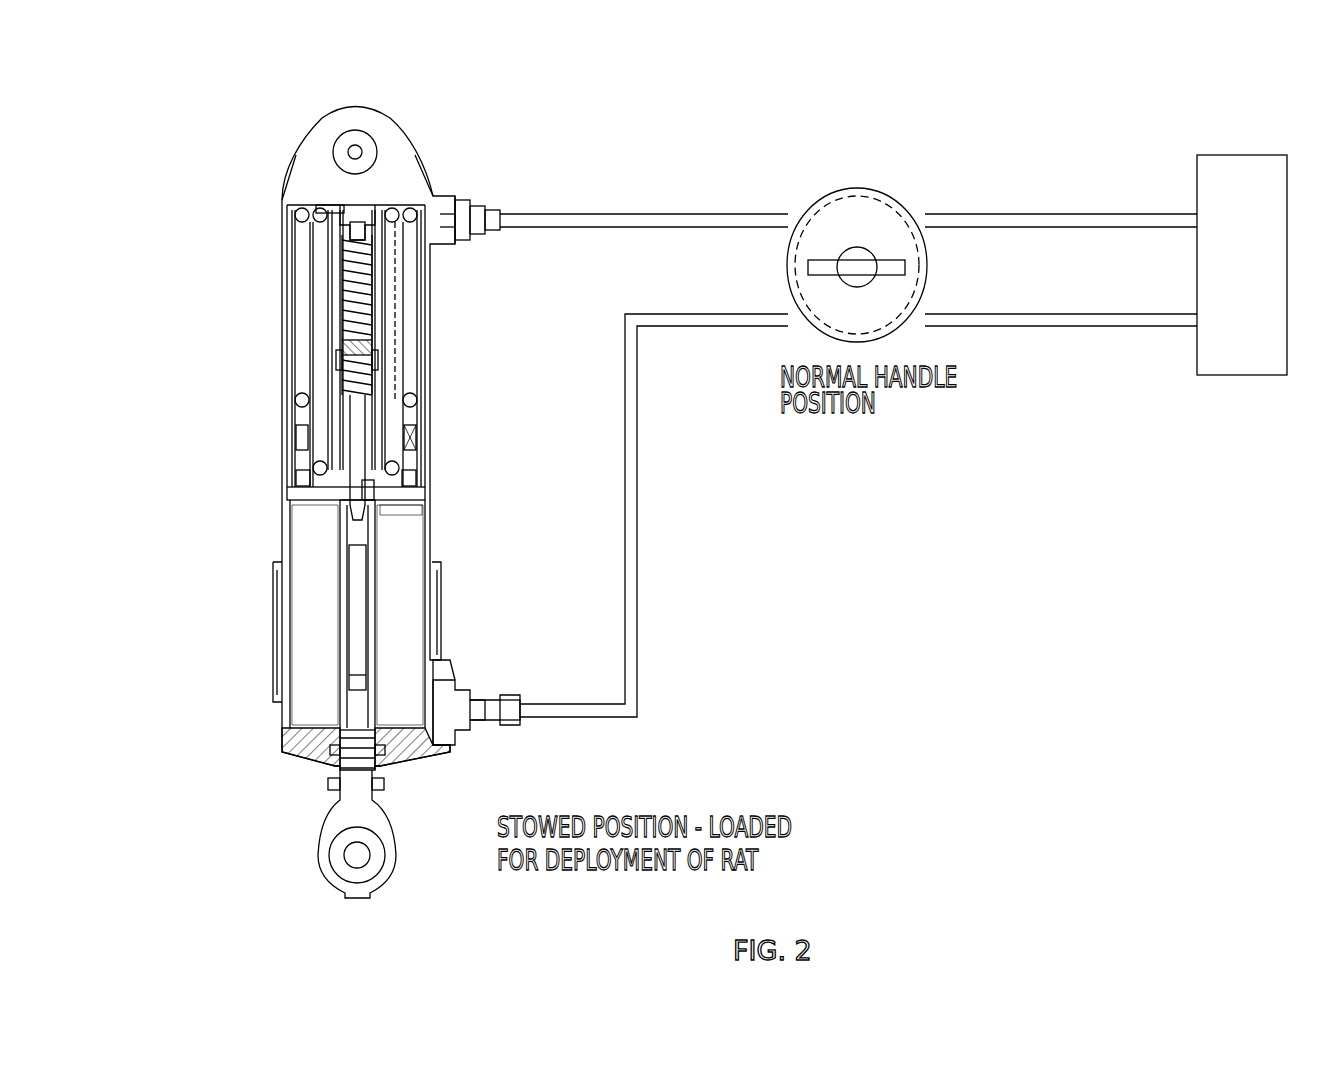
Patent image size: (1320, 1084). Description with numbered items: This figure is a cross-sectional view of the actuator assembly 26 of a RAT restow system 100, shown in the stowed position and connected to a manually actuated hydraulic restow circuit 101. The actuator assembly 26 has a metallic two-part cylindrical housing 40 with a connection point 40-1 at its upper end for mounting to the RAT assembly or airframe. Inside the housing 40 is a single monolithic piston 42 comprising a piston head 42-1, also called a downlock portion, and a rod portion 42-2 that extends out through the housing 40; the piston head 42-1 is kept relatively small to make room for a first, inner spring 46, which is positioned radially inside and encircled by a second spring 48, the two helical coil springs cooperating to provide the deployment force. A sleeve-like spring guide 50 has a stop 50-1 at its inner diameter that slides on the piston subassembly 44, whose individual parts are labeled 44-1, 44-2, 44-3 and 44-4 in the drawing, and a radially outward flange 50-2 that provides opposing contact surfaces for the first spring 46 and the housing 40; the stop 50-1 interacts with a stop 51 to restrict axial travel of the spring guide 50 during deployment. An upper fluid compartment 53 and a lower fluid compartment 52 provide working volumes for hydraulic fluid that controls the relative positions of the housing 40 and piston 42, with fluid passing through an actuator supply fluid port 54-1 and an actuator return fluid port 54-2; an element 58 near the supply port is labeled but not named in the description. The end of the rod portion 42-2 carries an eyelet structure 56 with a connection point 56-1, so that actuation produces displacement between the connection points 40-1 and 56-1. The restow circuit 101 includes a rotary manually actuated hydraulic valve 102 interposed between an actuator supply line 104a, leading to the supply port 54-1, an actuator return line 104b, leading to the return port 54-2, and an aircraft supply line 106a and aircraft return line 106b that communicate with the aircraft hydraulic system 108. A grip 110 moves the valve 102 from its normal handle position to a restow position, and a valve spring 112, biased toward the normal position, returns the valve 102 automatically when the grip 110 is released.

The RAT restow system 100 is at (183, 124).
The actuator assembly 26 is at (250, 682).
The housing 40 is at (283, 612).
The connection point 40-1 is at (355, 152).
The piston 42 is at (290, 497).
The piston head 42-1 is at (305, 477).
The rod portion 42-2 is at (345, 560).
The piston subassembly 44 is at (350, 380).
The lock pin 44-1 is at (405, 495).
The lock plunger 44-2 is at (372, 445).
The lock cap 44-3 is at (356, 230).
The lock spring seat 44-4 is at (370, 372).
The first spring 46 is at (430, 495).
The second spring 48 is at (420, 410).
The spring guide 50 is at (390, 255).
The stop 50-1 is at (345, 335).
The flange 50-2 is at (322, 210).
The stop 51 is at (340, 205).
The lower fluid compartment 52 is at (330, 627).
The upper fluid compartment 53 is at (345, 238).
The actuator supply fluid port 54-1 is at (518, 700).
The actuator return fluid port 54-2 is at (495, 215).
The eyelet structure 56 is at (350, 822).
The connection point 56-1 is at (357, 855).
The port boss 58 is at (415, 665).
The manually actuated hydraulic restow circuit 101 is at (915, 420).
The manually actuated hydraulic valve 102 is at (875, 186).
The actuator supply line 104a is at (748, 326).
The actuator return line 104b is at (748, 214).
The aircraft supply line 106a is at (965, 326).
The aircraft return line 106b is at (1000, 214).
The hydraulic system 108 is at (1258, 282).
The grip 110 is at (900, 265).
The valve spring 112 is at (826, 198).